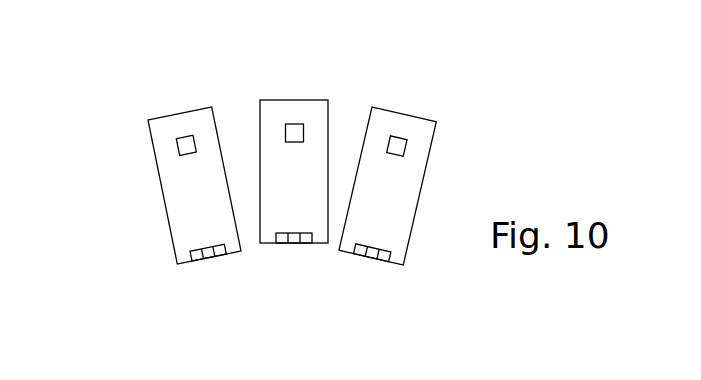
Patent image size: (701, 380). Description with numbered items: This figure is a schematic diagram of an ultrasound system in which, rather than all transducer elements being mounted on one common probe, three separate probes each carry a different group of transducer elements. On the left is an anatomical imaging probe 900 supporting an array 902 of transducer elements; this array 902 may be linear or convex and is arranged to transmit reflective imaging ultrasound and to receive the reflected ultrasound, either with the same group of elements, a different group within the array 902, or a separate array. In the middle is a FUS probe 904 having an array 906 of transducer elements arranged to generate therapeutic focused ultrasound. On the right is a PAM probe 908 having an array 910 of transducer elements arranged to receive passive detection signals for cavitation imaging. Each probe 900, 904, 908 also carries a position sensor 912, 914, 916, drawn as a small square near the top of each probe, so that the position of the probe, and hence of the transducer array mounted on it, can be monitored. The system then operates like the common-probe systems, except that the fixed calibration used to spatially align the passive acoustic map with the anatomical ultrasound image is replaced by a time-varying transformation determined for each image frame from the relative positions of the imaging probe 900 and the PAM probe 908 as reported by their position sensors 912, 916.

The anatomical imaging probe 900 is at (170, 110).
The array 902 is at (203, 259).
The FUS probe 904 is at (311, 100).
The array 906 is at (287, 243).
The PAM probe 908 is at (392, 108).
The array 910 is at (372, 257).
The position sensor 912 is at (177, 147).
The position sensor 914 is at (292, 124).
The position sensor 916 is at (403, 138).